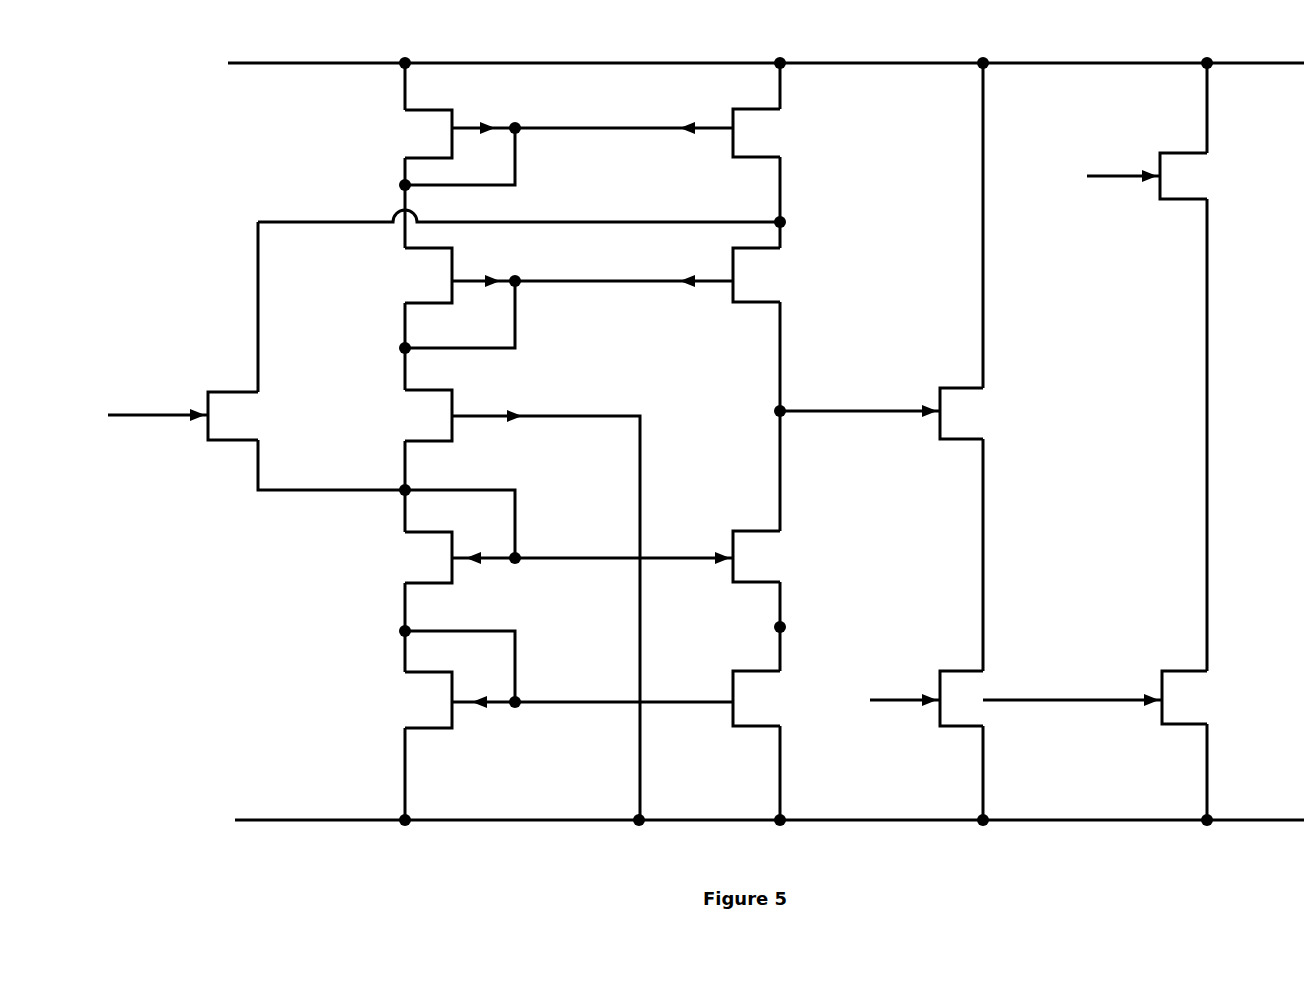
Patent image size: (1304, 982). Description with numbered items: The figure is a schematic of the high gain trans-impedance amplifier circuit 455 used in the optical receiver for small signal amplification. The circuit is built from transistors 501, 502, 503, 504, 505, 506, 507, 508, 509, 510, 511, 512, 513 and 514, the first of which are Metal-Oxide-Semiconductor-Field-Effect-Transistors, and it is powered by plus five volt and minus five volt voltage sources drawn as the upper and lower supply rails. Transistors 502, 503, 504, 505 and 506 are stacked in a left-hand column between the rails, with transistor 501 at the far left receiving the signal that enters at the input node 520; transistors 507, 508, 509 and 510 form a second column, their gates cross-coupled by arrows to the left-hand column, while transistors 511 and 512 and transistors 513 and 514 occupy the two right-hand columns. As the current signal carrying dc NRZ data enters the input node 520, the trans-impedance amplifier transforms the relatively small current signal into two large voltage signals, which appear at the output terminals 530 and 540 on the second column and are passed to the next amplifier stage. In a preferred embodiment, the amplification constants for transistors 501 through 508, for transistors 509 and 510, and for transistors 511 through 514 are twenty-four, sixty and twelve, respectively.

The high gain trans-impedance amplifier circuit 455 is at (147, 153).
The transistor 501 is at (260, 416).
The transistor 502 is at (542, 676).
The transistor 503 is at (542, 536).
The transistor 504 is at (496, 605).
The transistor 505 is at (540, 301).
The transistor 506 is at (544, 150).
The transistor 507 is at (780, 698).
The transistor 508 is at (783, 556).
The transistor 509 is at (781, 275).
The transistor 510 is at (781, 133).
The transistor 511 is at (960, 700).
The transistor 512 is at (989, 413).
The transistor 513 is at (1172, 176).
The transistor 514 is at (1213, 697).
The input node 520 is at (190, 412).
The output terminal 530 is at (788, 415).
The output terminal 540 is at (788, 628).